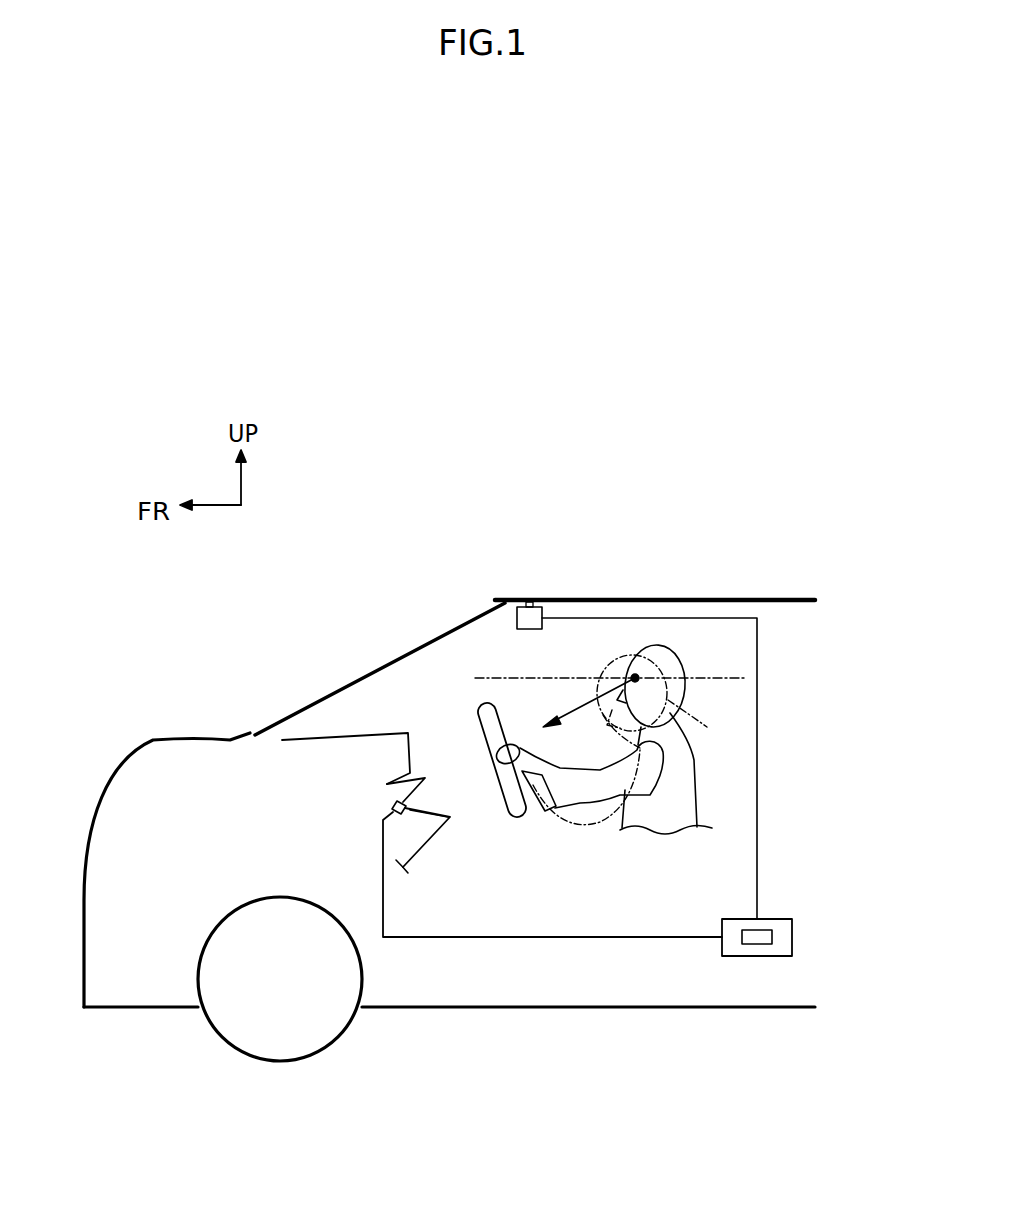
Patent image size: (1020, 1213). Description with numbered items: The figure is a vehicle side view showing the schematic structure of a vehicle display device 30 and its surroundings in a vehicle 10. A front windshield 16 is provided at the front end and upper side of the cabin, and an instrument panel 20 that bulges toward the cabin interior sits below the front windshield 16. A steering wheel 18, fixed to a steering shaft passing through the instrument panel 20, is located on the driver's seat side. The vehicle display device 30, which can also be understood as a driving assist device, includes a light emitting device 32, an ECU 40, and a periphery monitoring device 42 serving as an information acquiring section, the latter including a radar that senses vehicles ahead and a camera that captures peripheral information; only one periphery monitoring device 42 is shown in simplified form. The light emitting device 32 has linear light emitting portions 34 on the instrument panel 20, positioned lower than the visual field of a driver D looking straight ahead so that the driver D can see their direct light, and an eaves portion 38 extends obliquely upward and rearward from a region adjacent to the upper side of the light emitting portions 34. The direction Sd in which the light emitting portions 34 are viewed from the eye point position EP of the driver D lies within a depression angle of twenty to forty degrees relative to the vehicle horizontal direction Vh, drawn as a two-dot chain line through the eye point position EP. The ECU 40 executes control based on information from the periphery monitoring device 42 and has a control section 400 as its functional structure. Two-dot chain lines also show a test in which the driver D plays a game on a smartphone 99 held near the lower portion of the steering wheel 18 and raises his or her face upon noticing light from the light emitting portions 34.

The vehicle 10 is at (700, 528).
The front windshield 16 is at (397, 660).
The steering wheel 18 is at (482, 718).
The instrument panel 20 is at (385, 730).
The vehicle display device 30 is at (376, 808).
The light emitting device 32 is at (393, 801).
The light emitting portions 34 is at (420, 804).
The eaves portion 38 is at (425, 782).
The ECU 40 is at (792, 937).
The periphery monitoring device 42 is at (517, 618).
The smartphone 99 is at (533, 795).
The control section 400 is at (752, 944).
The driver D is at (688, 755).
The eye point position EP is at (631, 676).
The vehicle horizontal direction Vh is at (562, 678).
The viewing direction Sd is at (585, 706).